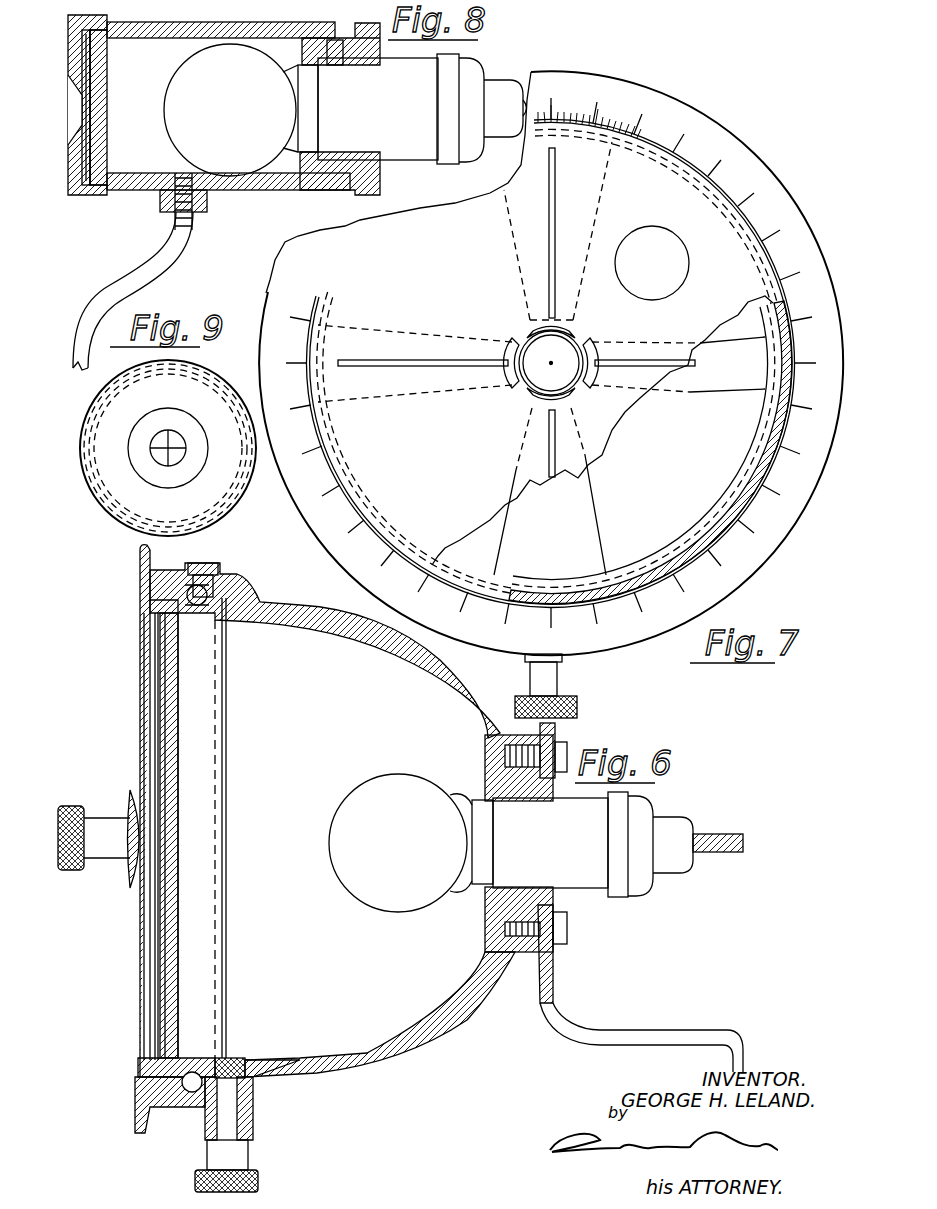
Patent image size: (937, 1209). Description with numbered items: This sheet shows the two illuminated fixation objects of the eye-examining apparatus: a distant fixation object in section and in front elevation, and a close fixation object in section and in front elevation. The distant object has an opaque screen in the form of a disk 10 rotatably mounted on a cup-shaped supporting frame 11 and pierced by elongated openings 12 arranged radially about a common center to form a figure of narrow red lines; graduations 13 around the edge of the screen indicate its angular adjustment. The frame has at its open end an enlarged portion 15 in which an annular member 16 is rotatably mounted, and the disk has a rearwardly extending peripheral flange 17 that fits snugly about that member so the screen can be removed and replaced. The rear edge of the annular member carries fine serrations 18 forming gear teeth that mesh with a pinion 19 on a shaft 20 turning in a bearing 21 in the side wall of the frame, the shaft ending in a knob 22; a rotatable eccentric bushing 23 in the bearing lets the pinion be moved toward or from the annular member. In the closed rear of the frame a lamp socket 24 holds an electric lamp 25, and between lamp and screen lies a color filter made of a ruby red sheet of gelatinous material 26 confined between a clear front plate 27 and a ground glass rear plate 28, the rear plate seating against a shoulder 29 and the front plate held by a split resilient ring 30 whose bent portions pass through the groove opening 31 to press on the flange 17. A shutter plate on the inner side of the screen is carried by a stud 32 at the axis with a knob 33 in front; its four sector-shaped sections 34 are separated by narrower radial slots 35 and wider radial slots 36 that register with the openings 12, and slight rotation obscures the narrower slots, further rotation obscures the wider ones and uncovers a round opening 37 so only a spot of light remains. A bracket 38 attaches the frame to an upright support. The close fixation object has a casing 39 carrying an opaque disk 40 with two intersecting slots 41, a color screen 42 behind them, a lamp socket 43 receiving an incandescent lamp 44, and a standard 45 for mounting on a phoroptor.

In FIG. 7, the disk 10 is at (398, 182).
In FIG. 6, the disk 10 is at (150, 624).
In FIG. 6, the supporting frame 11 is at (345, 622).
In FIG. 7, the elongated openings 12 is at (552, 244).
In FIG. 6, the elongated openings 12 is at (152, 690).
In FIG. 7, the graduations 13 is at (680, 592).
In FIG. 6, the enlarged portion 15 is at (238, 592).
In FIG. 6, the annular member 16 is at (205, 618).
In FIG. 7, the peripheral flange 17 is at (652, 172).
In FIG. 6, the peripheral flange 17 is at (160, 590).
In FIG. 6, the serrations 18 is at (220, 908).
In FIG. 6, the pinion 19 is at (230, 1062).
In FIG. 6, the shaft 20 is at (237, 1098).
In FIG. 6, the bearing 21 is at (205, 1108).
In FIG. 7, the knob 22 is at (577, 710).
In FIG. 6, the knob 22 is at (258, 1178).
In FIG. 6, the eccentric bushing 23 is at (253, 1118).
In FIG. 6, the lamp socket 24 is at (607, 844).
In FIG. 6, the electric lamp 25 is at (400, 843).
In FIG. 6, the sheet of gelatinous material 26 is at (168, 795).
In FIG. 6, the front plate 27 is at (163, 735).
In FIG. 6, the rear plate 28 is at (172, 728).
In FIG. 6, the shoulder 29 is at (183, 613).
In FIG. 7, the split resilient ring 30 is at (680, 548).
In FIG. 6, the split resilient ring 30 is at (140, 607).
In FIG. 7, the groove opening 31 is at (544, 600).
In FIG. 6, the groove opening 31 is at (138, 1073).
In FIG. 6, the stud 32 is at (132, 848).
In FIG. 7, the knob 33 is at (550, 362).
In FIG. 6, the knob 33 is at (64, 870).
In FIG. 7, the sector-shaped sections 34 is at (612, 450).
In FIG. 6, the sector-shaped sections 34 is at (150, 657).
In FIG. 7, the radial slots 35 is at (436, 378).
In FIG. 7, the radial slots 36 is at (575, 306).
In FIG. 7, the round opening 37 is at (688, 272).
In FIG. 6, the bracket 38 is at (553, 976).
In FIG. 8, the casing 39 is at (300, 190).
In FIG. 9, the casing 39 is at (222, 512).
In FIG. 8, the opaque disk 40 is at (90, 68).
In FIG. 9, the opaque disk 40 is at (168, 445).
In FIG. 8, the intersecting slots 41 is at (86, 105).
In FIG. 9, the intersecting slots 41 is at (170, 452).
In FIG. 8, the color screen 42 is at (100, 153).
In FIG. 8, the lamp socket 43 is at (422, 109).
In FIG. 8, the incandescent lamp 44 is at (241, 110).
In FIG. 8, the standard 45 is at (165, 258).